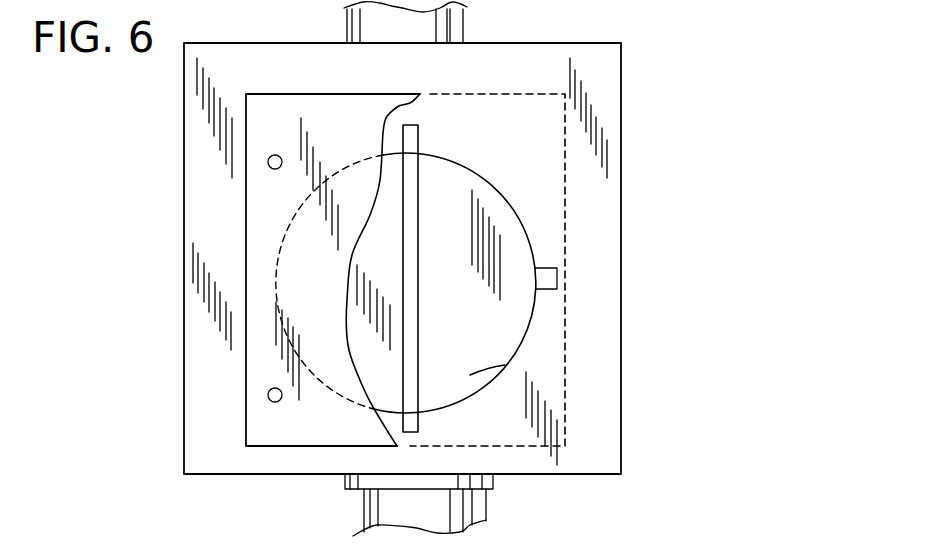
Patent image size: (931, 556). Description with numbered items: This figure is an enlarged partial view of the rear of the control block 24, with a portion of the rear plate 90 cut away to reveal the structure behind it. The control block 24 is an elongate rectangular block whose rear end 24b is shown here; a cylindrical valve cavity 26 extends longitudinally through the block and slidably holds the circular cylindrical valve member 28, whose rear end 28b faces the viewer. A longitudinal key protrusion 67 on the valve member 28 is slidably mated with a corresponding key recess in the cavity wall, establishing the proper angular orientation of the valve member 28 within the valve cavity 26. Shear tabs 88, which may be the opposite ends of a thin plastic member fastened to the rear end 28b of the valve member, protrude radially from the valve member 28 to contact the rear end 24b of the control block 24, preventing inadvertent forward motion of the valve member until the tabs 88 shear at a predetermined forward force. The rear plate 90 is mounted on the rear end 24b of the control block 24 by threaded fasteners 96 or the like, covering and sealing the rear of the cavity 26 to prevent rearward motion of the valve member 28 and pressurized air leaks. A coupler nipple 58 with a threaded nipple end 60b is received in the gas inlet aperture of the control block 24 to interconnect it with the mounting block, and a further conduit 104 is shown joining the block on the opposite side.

The control block 24 is at (516, 482).
The rear end of control block 24b is at (575, 452).
The valve cavity 26 is at (487, 385).
The valve member 28 is at (530, 332).
The rear end of valve member 28b is at (497, 205).
The coupler nipple 58 is at (363, 513).
The nipple end 60b is at (352, 489).
The key protrusion 67 is at (546, 268).
The shear tabs 88 is at (419, 130).
The rear plate 90 is at (246, 280).
The threaded fasteners 96 is at (267, 162).
The inlet conduit 104 is at (347, 10).